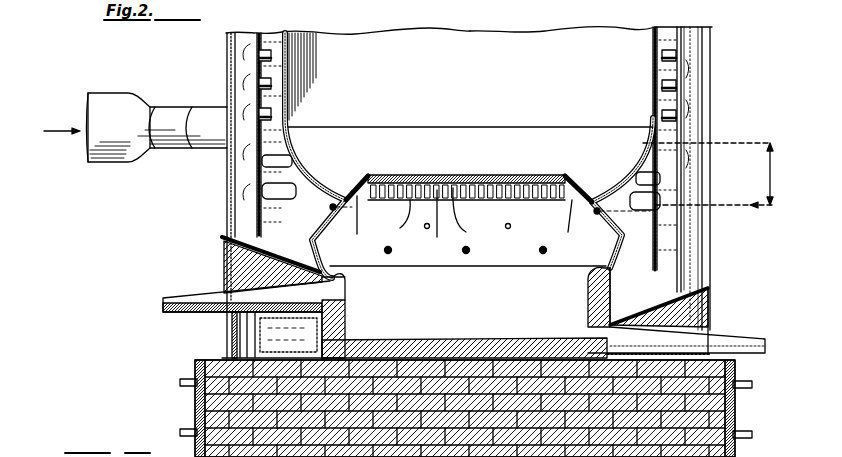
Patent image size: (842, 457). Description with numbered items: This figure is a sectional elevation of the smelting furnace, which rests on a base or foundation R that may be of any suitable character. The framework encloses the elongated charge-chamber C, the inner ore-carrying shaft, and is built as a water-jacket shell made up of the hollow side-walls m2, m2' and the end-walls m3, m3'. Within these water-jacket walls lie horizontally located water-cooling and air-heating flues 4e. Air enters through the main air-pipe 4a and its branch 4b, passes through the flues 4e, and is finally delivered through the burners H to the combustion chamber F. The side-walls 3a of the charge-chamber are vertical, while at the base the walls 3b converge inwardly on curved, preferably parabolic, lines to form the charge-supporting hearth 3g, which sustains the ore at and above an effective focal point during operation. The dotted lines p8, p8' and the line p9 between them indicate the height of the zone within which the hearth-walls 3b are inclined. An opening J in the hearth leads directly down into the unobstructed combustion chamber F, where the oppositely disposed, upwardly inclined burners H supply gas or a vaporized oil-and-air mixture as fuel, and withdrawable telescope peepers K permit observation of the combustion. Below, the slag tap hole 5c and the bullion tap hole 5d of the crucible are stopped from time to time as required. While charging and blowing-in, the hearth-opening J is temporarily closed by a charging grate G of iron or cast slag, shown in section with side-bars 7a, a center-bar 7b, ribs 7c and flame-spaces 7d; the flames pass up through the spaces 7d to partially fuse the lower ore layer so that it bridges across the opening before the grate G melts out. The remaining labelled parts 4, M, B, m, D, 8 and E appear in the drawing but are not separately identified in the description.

The hollow side-wall m2 is at (562, 16).
The hollow side-wall m2' is at (348, 23).
The outer casing wall 4 is at (240, 208).
The outer casing M is at (698, 77).
The end-wall m3 is at (216, 135).
The end-wall m3' is at (711, 148).
The water-cooling and air-heating flue 4e is at (272, 57).
The side-wall of charge-chamber 3a is at (286, 93).
The charge-supporting hearth 3g is at (312, 156).
The hearth wall 3b is at (508, 143).
The charge-chamber C is at (500, 75).
The main air-pipe 4a is at (99, 160).
The branch of main air-pipe 4b is at (160, 150).
The air passage B is at (461, 173).
The nozzles and plates m is at (222, 248).
The air duct D is at (700, 200).
The dotted line p8 is at (708, 130).
The dotted line p9 is at (780, 174).
The dotted line p8' is at (735, 214).
The charging grate G is at (465, 163).
The center-bar 7b is at (393, 176).
The side-bar 7a is at (471, 215).
The flame-space 7d is at (433, 222).
The rib 7c is at (470, 215).
The hearth-opening J is at (405, 217).
The telescope peeper K is at (511, 226).
The combustion chamber F is at (505, 251).
The burner H is at (390, 252).
The pipe 8 is at (545, 252).
The lower chamber floor E is at (516, 312).
The slag tap hole 5c is at (348, 293).
The bullion tap hole 5d is at (597, 336).
The base or foundation R is at (735, 412).